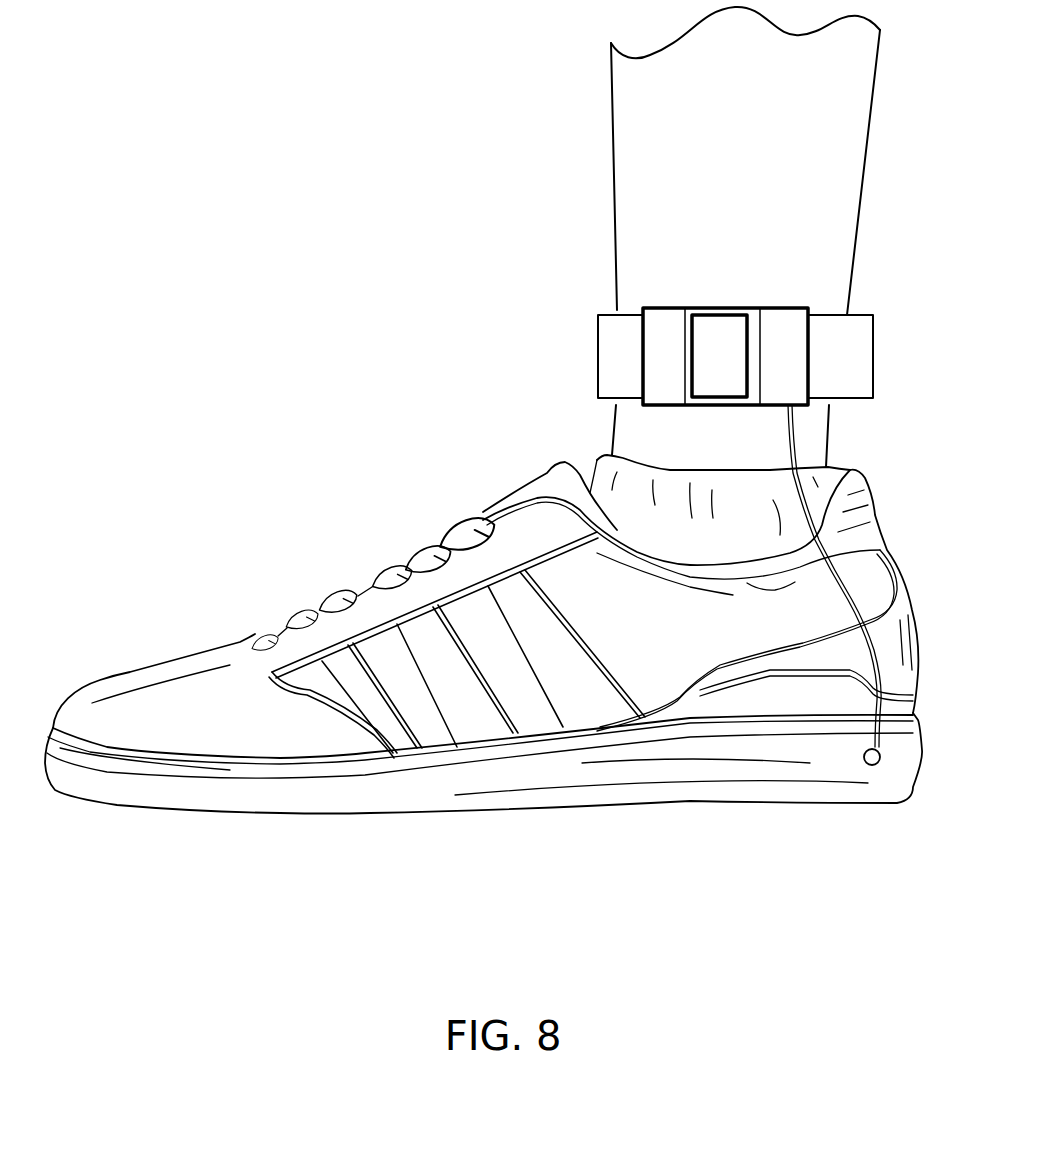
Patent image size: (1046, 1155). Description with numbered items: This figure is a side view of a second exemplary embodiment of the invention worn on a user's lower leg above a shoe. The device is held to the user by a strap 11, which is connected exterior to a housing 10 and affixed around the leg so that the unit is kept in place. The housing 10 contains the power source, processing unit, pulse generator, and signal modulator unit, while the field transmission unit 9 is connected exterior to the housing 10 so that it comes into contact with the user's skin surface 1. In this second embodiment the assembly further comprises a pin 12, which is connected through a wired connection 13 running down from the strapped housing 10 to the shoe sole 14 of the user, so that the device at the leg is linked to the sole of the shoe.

The skin surface 1 is at (855, 213).
The field transmission unit 9 is at (720, 328).
The housing 10 is at (657, 320).
The strap 11 is at (863, 387).
The pin 12 is at (880, 761).
The wired connection 13 is at (880, 680).
The shoe sole 14 is at (810, 803).